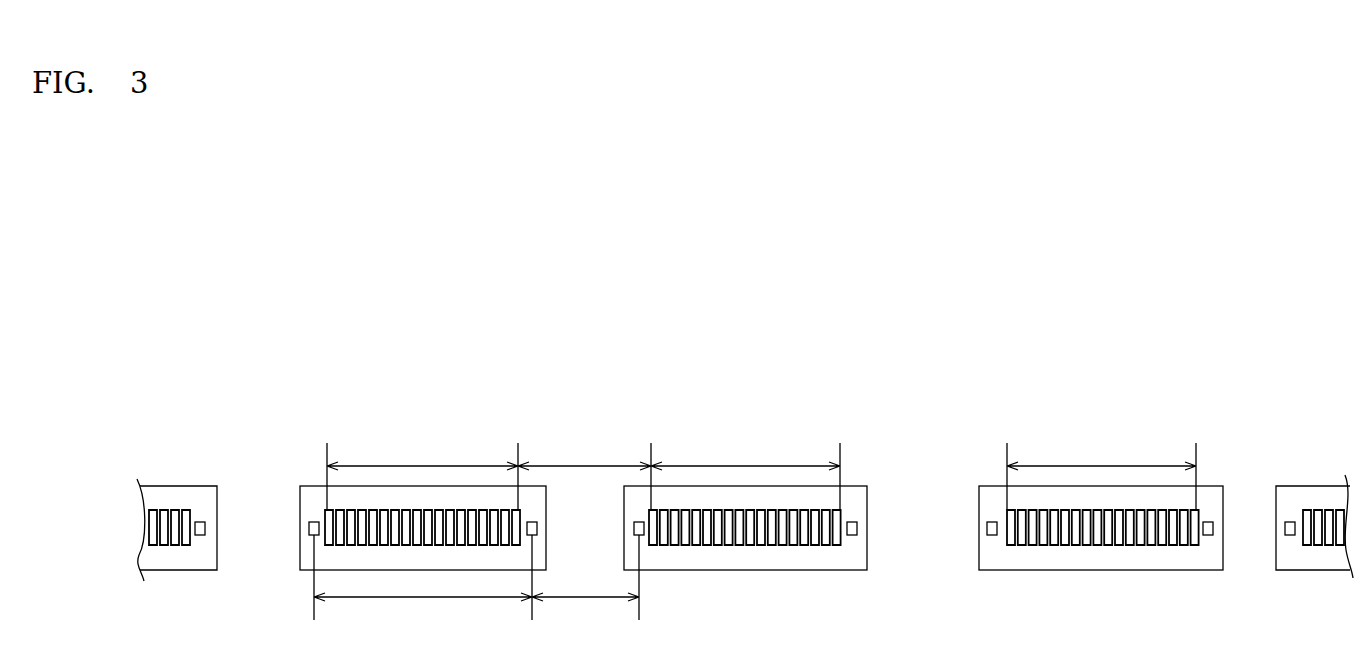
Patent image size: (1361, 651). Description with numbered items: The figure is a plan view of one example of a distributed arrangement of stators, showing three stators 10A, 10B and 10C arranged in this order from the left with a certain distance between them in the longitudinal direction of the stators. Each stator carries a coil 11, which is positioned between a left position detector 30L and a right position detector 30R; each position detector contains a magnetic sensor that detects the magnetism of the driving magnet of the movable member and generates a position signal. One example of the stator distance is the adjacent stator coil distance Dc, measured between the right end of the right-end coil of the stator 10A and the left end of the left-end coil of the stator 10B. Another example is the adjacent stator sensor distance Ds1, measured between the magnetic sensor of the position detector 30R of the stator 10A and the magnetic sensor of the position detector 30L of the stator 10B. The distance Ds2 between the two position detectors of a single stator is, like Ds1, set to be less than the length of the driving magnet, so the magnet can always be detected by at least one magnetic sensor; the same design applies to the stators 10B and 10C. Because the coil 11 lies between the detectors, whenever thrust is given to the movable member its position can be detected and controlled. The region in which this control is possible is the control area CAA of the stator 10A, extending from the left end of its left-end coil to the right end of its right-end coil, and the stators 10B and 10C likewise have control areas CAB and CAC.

The stator 10A is at (313, 486).
The stator 10B is at (769, 500).
The stator 10C is at (1208, 484).
The coil 11 is at (651, 538).
The position detector 30L is at (309, 528).
The position detector 30R is at (537, 528).
The control area CAA is at (422, 470).
The control area CAB is at (745, 470).
The control area CAC is at (1101, 470).
The adjacent stator coil distance Dc is at (584, 450).
The adjacent stator sensor distance Ds1 is at (585, 585).
The distance between position detectors Ds2 is at (423, 585).